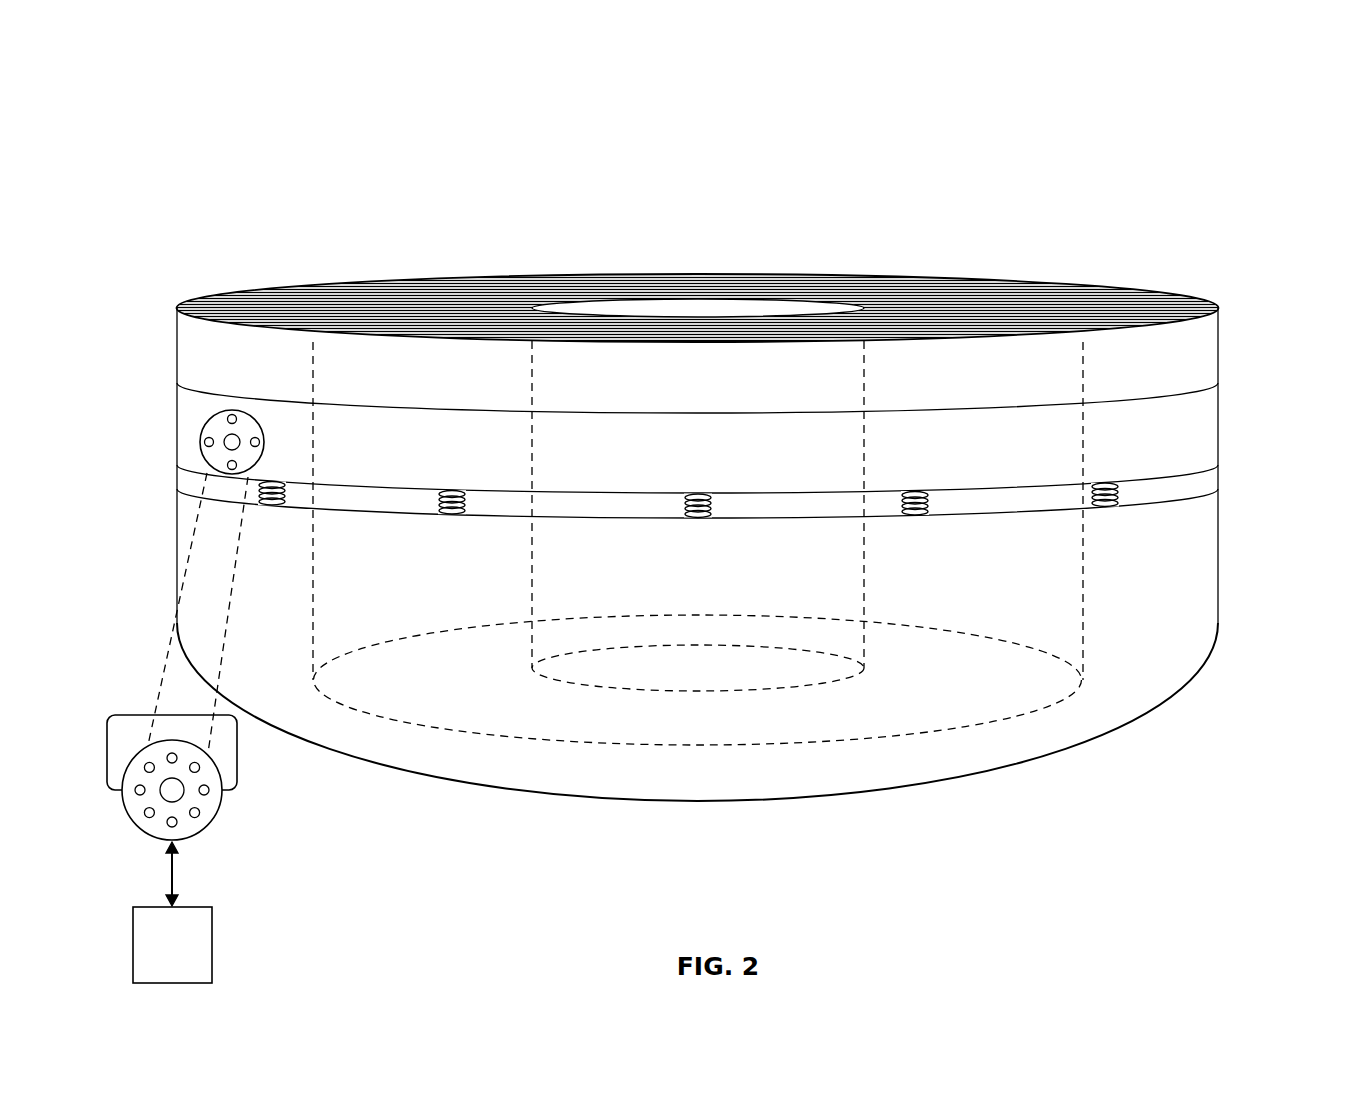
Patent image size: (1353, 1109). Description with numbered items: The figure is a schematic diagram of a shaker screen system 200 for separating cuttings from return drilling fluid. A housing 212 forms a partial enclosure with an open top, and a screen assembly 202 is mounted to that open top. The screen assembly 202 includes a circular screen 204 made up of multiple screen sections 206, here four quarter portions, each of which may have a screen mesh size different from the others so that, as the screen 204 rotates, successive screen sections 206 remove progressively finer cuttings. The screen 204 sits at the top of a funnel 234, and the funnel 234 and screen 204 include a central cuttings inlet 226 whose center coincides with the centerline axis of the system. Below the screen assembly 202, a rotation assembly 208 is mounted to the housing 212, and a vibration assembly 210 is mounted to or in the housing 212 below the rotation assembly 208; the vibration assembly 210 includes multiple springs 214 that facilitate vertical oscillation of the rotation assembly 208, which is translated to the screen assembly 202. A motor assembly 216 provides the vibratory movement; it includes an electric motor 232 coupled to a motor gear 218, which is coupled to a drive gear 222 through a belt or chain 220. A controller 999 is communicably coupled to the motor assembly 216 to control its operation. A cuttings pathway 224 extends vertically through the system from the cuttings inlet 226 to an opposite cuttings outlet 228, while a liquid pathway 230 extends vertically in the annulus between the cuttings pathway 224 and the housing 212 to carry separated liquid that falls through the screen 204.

The shaker screen system 200 is at (1237, 103).
The screen assembly 202 is at (955, 283).
The screen 204 is at (1036, 285).
The screen sections 206 is at (305, 305).
The rotation assembly 208 is at (170, 447).
The vibration assembly 210 is at (1232, 472).
The housing 212 is at (1093, 738).
The springs 214 is at (265, 505).
The motor assembly 216 is at (234, 810).
The motor gear 218 is at (168, 794).
The belt or chain 220 is at (162, 673).
The drive gear 222 is at (226, 437).
The cuttings pathway 224 is at (872, 565).
The cuttings inlet 226 is at (752, 298).
The cuttings outlet 228 is at (852, 680).
The liquid pathway 230 is at (1083, 557).
The electric motor 232 is at (237, 750).
The funnel 234 is at (186, 352).
The controller 999 is at (172, 945).